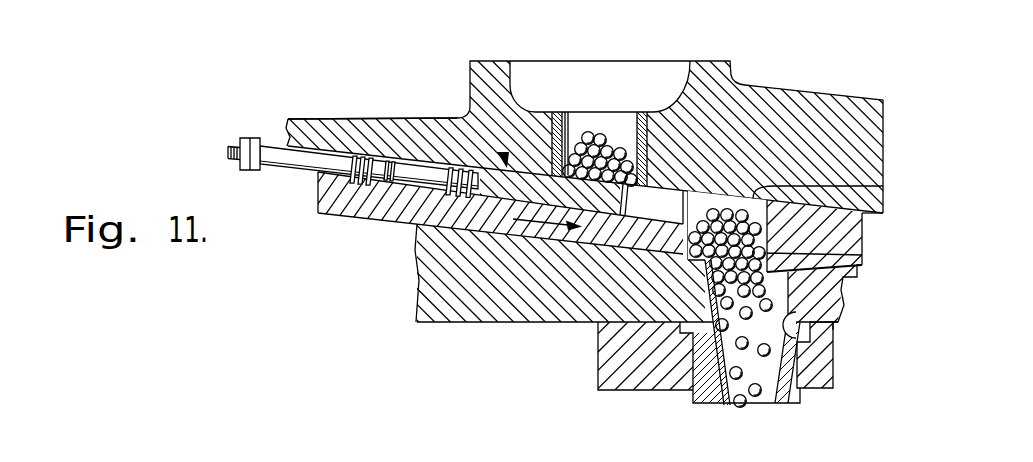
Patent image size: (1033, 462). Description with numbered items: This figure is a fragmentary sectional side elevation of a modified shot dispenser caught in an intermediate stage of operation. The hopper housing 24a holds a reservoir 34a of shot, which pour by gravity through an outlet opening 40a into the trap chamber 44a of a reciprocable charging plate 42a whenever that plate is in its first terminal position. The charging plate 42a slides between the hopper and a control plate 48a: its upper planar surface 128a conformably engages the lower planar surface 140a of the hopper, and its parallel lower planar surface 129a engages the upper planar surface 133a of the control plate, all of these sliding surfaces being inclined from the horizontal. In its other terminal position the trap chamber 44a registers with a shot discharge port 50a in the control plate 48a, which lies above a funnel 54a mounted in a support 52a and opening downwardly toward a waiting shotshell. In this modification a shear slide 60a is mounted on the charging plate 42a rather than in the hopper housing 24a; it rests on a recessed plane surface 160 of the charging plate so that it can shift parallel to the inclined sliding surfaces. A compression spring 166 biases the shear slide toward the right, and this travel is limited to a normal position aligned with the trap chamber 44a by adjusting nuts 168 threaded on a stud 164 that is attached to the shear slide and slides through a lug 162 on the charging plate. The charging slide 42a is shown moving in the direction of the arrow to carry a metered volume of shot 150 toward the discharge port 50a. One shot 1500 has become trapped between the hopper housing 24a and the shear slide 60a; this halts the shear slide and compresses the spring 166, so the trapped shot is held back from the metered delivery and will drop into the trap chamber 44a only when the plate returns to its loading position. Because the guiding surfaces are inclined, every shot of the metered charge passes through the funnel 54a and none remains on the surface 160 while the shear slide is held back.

The hopper housing 24a is at (467, 75).
The reservoir 34a is at (583, 97).
The outlet opening 40a is at (628, 112).
The charging plate 42a is at (350, 224).
The trap chamber 44a is at (883, 186).
The control plate 48a is at (440, 322).
The shot discharge port 50a is at (798, 341).
The support 52a is at (835, 378).
The funnel 54a is at (800, 403).
The shear slide 60a is at (490, 152).
The upper planar surface 128a is at (878, 213).
The lower planar surface 129a is at (841, 319).
The upper planar surface of control plate 133a is at (845, 285).
The lower planar surface of hopper 140a is at (862, 238).
The shot 150 is at (866, 265).
The recessed plane surface 160 is at (658, 224).
The lug 162 is at (327, 119).
The stud 164 is at (298, 170).
The compression spring 166 is at (380, 155).
The adjusting nuts 168 is at (250, 138).
The trapped shot 1500 is at (654, 222).